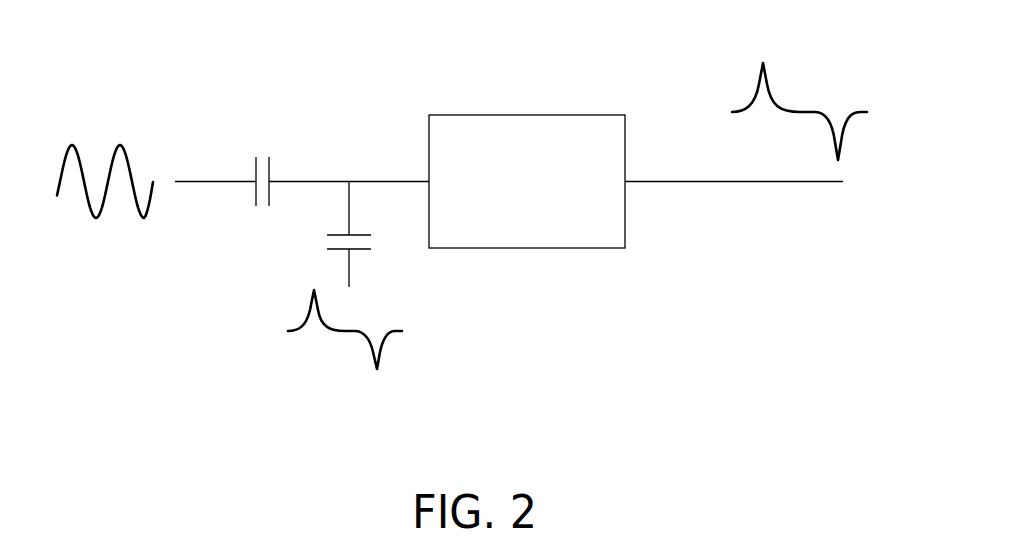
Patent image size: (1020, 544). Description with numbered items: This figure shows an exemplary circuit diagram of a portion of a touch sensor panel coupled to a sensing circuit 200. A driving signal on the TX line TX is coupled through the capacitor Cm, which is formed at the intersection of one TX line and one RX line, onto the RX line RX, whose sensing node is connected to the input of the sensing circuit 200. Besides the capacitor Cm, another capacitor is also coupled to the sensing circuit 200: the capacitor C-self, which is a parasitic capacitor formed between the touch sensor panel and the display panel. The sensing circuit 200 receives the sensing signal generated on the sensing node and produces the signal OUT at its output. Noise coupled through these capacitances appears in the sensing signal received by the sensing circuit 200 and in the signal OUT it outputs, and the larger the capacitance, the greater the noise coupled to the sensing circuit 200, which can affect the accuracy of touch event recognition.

The sensing circuit 200 is at (528, 115).
The TX line TX is at (145, 186).
The RX line RX is at (349, 166).
The capacitor Cm is at (262, 168).
The capacitor C-self is at (306, 235).
The output signal OUT is at (778, 132).